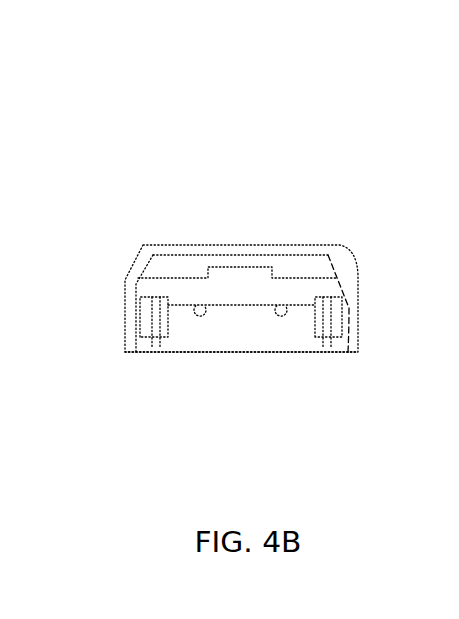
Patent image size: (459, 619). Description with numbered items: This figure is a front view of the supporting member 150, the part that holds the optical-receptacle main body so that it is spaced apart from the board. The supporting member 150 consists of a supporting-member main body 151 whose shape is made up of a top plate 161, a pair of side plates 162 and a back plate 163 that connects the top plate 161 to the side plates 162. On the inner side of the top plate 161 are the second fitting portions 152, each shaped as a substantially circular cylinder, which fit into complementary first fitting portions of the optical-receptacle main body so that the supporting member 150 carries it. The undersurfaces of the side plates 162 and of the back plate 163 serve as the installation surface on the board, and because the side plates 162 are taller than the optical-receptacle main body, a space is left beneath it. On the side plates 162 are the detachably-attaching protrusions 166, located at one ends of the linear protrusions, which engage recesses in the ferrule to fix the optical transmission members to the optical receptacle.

The supporting member 150 is at (390, 85).
The supporting-member main body 151 is at (341, 250).
The second fitting portions 152 is at (280, 304).
The top plate 161 is at (275, 250).
The pair of side plates 162 is at (132, 283).
The back plate 163 is at (223, 340).
The detachably-attaching protrusions 166 is at (155, 325).